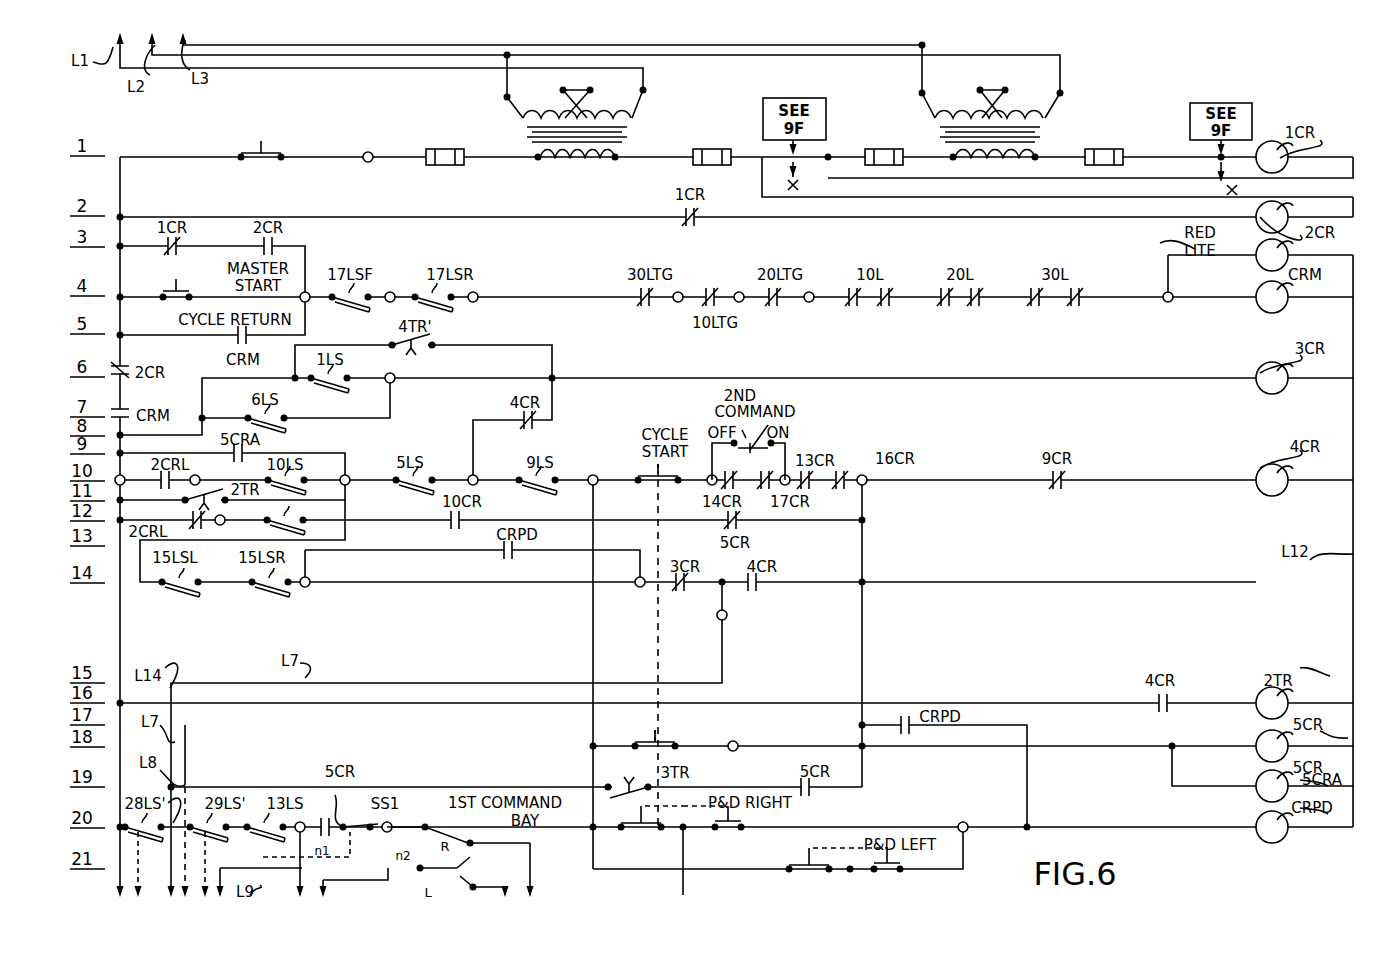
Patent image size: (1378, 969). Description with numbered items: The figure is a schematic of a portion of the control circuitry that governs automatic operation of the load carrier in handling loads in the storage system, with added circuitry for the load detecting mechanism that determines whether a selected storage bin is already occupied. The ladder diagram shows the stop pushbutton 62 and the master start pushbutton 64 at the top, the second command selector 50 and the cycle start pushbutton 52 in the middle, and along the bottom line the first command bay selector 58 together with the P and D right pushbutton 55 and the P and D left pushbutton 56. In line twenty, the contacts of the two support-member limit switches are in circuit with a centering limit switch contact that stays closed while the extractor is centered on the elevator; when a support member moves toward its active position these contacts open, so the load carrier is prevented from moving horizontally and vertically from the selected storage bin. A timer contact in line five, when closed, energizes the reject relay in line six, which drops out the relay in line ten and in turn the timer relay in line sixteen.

The second command selector switch 50 is at (779, 446).
The cycle start pushbutton 52 is at (645, 469).
The P&amp;D right pushbutton 55 is at (670, 840).
The P&amp;D left pushbutton 56 is at (860, 875).
The first command bay selector switch 58 is at (461, 856).
The stop pushbutton 62 is at (279, 141).
The master start pushbutton 64 is at (172, 284).